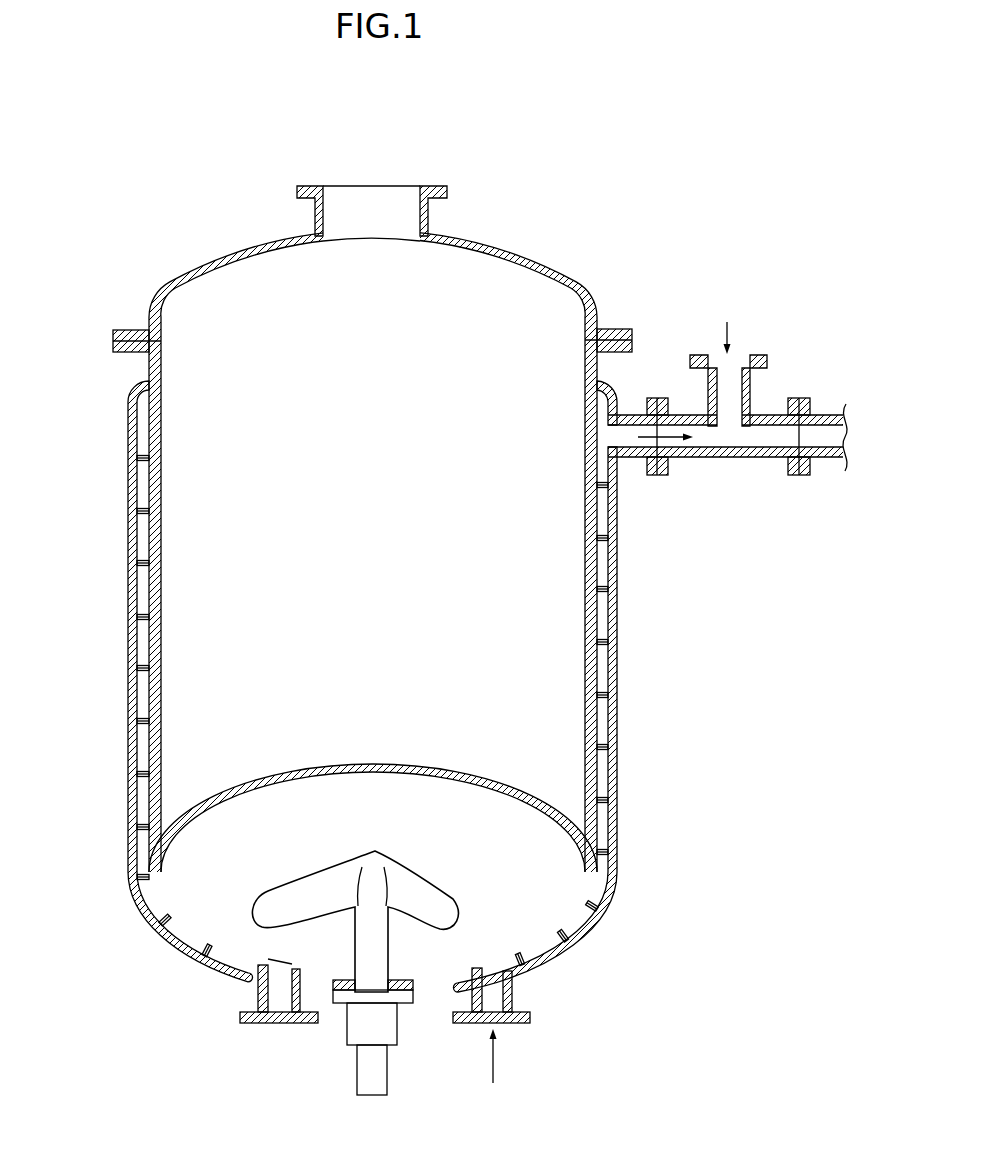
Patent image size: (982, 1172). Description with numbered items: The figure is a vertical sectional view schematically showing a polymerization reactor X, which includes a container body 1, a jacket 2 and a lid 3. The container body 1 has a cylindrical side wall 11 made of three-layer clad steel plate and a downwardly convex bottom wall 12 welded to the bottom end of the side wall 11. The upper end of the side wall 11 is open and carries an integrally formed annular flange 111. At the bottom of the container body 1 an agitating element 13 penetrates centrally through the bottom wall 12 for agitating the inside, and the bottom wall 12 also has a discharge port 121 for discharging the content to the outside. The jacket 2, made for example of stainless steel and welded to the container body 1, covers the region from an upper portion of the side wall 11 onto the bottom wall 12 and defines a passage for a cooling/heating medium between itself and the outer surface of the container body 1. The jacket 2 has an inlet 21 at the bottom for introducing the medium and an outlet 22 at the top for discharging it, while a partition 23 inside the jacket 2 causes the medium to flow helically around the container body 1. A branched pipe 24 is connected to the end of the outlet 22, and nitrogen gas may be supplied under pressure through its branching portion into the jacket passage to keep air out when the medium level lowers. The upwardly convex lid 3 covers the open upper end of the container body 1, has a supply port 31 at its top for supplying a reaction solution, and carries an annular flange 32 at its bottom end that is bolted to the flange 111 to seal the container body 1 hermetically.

The polymerization reactor X is at (190, 116).
The container body 1 is at (600, 558).
The side wall 11 is at (590, 615).
The annular flange 111 is at (113, 345).
The bottom wall 12 is at (547, 958).
The discharge port 121 is at (281, 1010).
The agitating element 13 is at (404, 890).
The jacket 2 is at (615, 727).
The inlet 21 is at (498, 1013).
The outlet 22 is at (630, 432).
The partition 23 is at (603, 692).
The branched pipe 24 is at (767, 435).
The lid 3 is at (510, 247).
The supply port 31 is at (360, 198).
The annular flange 32 is at (113, 336).